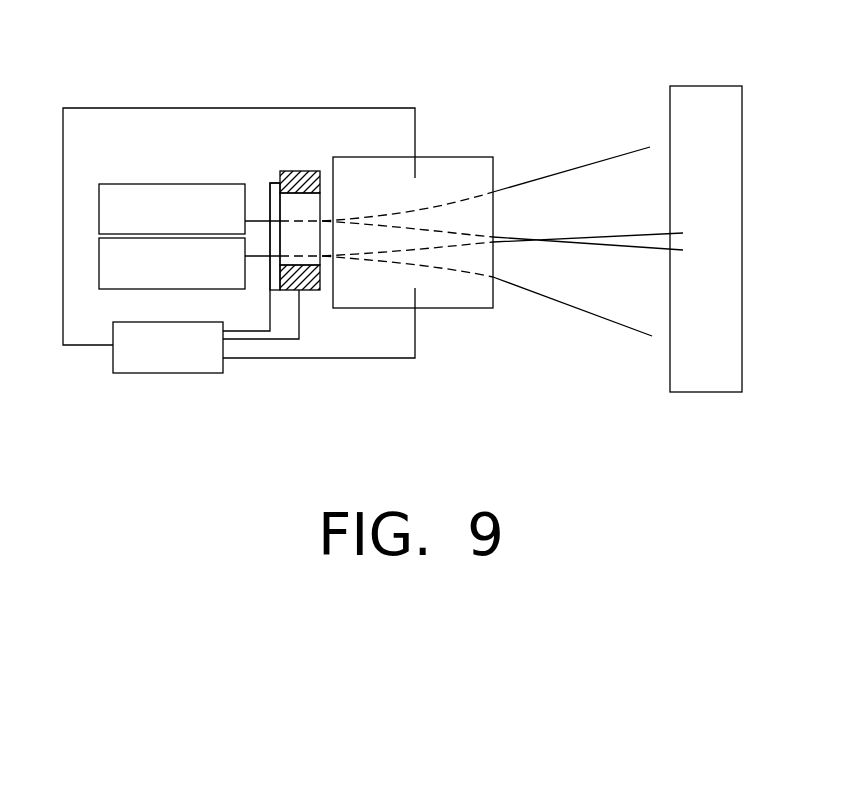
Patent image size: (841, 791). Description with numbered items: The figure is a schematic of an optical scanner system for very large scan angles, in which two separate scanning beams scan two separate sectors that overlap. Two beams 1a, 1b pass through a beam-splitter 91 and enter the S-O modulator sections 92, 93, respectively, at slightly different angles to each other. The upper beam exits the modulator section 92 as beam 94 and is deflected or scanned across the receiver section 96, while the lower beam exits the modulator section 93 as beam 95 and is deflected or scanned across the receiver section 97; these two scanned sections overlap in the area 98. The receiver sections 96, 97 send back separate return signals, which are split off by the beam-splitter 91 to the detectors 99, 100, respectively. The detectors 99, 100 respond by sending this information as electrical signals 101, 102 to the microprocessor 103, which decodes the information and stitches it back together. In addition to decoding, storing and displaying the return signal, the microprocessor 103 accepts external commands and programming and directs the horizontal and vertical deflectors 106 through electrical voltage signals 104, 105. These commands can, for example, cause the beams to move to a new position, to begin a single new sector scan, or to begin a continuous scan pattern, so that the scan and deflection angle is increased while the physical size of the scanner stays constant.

The beam 1a is at (189, 209).
The beam 1b is at (189, 263).
The beam-splitter 91 is at (271, 199).
The S-O modulator section 92 is at (413, 194).
The S-O modulator section 93 is at (413, 270).
The beam 94 is at (613, 157).
The beam 95 is at (613, 322).
The receiver section 96 is at (706, 239).
The receiver section 97 is at (706, 326).
The overlap area 98 is at (608, 244).
The detector 99 is at (288, 170).
The detector 100 is at (303, 290).
The electrical signal 101 is at (245, 331).
The electrical signal 102 is at (257, 339).
The microprocessor 103 is at (168, 347).
The electrical voltage signal 104 is at (120, 108).
The electrical voltage signal 105 is at (415, 330).
The horizontal and vertical deflectors 106 is at (440, 157).